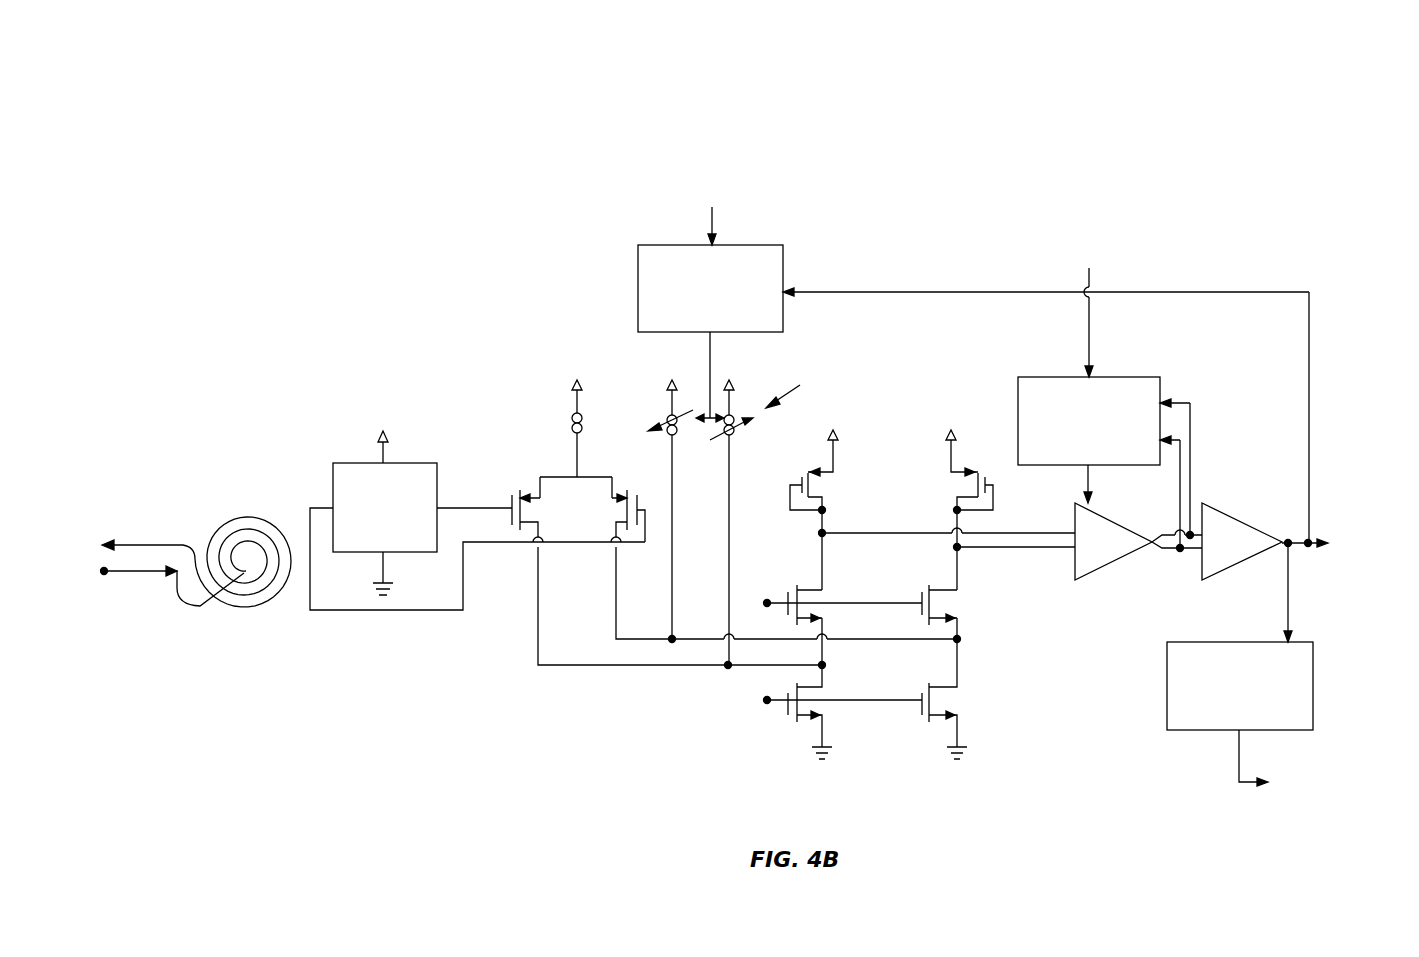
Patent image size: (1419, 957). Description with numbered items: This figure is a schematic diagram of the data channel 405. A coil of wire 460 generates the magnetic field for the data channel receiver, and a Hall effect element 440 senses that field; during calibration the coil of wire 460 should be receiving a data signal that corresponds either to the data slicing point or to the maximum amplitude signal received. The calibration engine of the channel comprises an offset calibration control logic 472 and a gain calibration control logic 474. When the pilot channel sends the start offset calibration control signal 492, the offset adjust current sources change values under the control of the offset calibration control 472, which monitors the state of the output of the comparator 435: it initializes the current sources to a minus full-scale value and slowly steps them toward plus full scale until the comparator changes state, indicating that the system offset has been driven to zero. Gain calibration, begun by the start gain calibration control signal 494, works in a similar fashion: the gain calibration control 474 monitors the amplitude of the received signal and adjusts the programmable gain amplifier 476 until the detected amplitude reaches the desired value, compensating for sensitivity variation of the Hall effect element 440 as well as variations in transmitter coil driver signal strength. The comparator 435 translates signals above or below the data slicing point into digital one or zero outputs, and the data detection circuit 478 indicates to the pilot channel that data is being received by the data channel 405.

The data channel 405 is at (1192, 146).
The coil of wire 460 is at (242, 610).
The Hall effect element 440 is at (437, 482).
The offset calibration control logic 472 is at (785, 262).
The start offset calibration control signal 492 is at (777, 151).
The gain calibration control logic 474 is at (1018, 418).
The start gain calibration control signal 494 is at (1148, 213).
The programmable gain amplifier (PGA) 476 is at (1093, 573).
The comparator 435 is at (1222, 511).
The data detection circuit 478 is at (1167, 682).